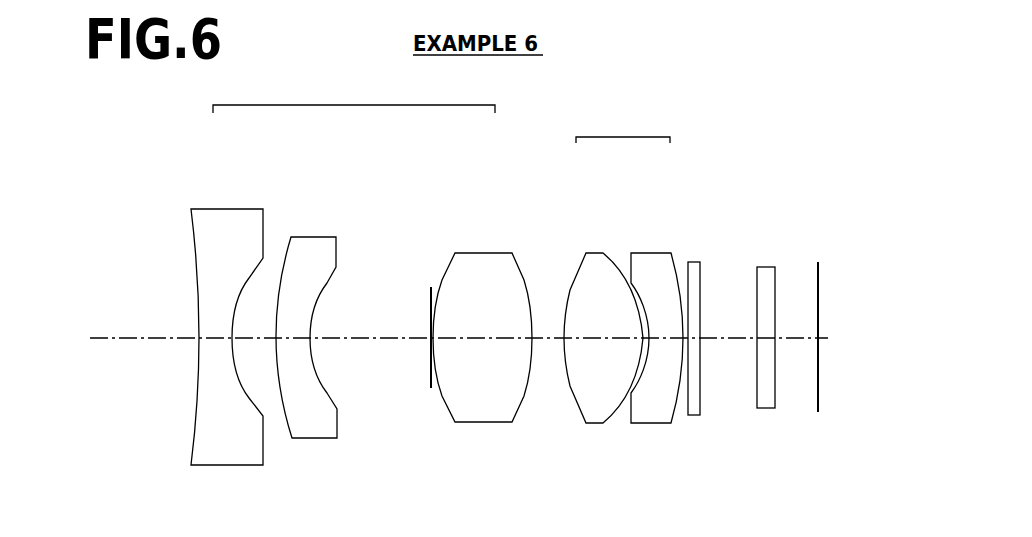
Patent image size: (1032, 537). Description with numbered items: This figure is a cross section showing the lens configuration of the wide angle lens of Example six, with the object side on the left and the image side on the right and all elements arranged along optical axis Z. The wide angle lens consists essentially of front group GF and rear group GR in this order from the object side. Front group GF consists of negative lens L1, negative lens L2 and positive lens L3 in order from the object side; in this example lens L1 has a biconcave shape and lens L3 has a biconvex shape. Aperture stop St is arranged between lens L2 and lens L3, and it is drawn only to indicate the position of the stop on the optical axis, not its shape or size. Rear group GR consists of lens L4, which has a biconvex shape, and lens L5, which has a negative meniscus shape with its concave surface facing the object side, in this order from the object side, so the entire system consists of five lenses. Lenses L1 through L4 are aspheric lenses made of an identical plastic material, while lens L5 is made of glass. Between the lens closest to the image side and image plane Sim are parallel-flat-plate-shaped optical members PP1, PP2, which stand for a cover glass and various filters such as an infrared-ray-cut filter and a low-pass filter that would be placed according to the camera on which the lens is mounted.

The optical axis Z is at (112, 333).
The front group GF is at (354, 98).
The rear group GR is at (623, 129).
The lens L1 is at (231, 214).
The lens L2 is at (315, 243).
The lens L3 is at (479, 258).
The lens L4 is at (595, 262).
The lens L5 is at (653, 262).
The aperture stop St is at (430, 302).
The optical member PP1 is at (694, 268).
The optical member PP2 is at (765, 270).
The image plane Sim is at (818, 412).